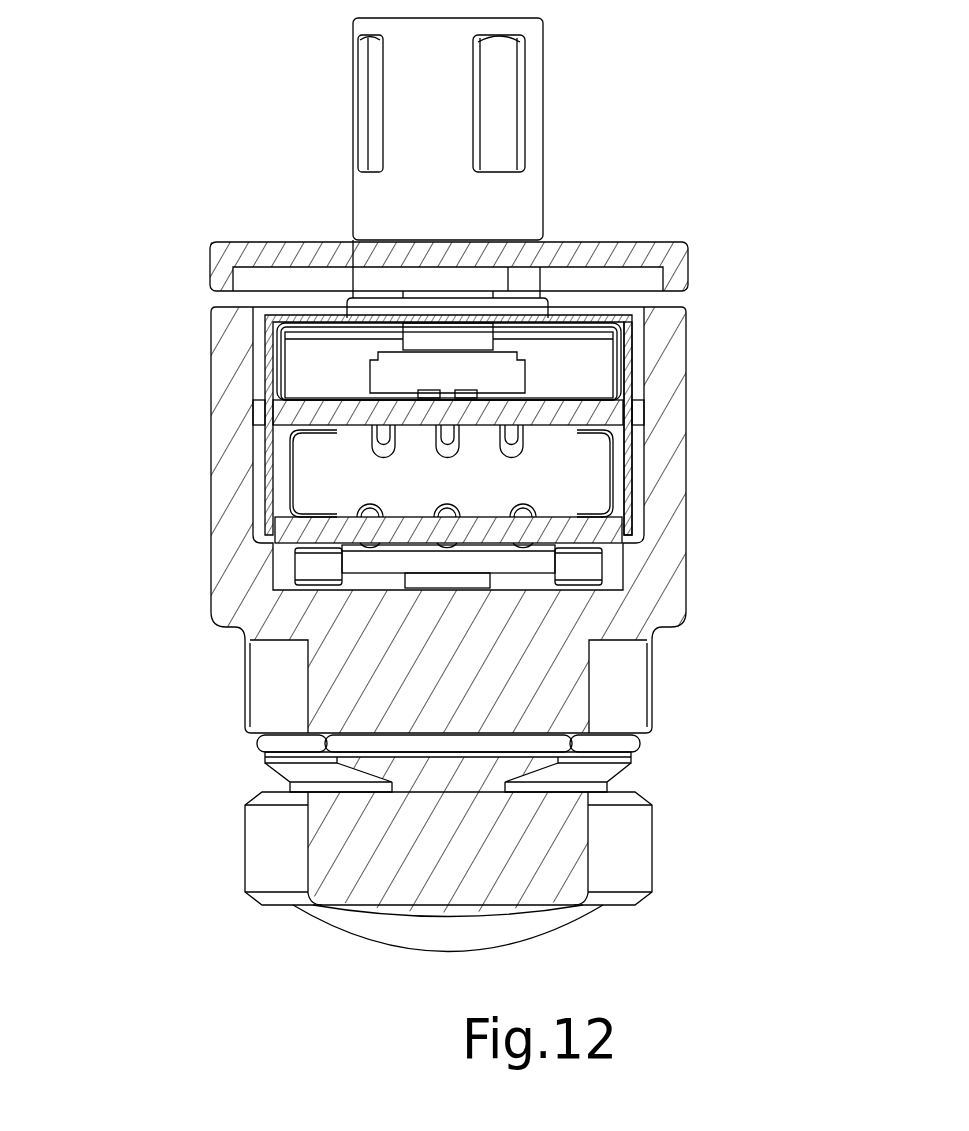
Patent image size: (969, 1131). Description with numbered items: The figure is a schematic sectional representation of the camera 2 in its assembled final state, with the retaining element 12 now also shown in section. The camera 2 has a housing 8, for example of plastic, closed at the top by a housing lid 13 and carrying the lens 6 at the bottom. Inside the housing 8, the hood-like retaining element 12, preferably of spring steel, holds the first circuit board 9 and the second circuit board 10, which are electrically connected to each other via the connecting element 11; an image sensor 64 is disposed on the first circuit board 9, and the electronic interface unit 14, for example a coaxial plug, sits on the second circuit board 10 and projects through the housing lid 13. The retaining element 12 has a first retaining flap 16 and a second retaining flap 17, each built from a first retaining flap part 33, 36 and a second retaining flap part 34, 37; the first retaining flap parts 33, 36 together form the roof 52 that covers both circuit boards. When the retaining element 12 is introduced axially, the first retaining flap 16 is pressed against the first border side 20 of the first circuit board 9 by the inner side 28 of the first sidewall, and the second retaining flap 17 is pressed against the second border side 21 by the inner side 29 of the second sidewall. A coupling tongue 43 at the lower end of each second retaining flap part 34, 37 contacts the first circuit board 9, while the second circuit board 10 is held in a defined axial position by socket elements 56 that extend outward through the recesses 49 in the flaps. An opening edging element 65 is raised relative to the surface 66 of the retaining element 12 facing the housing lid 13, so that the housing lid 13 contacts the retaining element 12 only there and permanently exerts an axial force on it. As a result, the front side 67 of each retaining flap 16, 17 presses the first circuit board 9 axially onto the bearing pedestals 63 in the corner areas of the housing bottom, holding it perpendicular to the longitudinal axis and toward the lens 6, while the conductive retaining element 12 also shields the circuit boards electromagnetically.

The camera 2 is at (302, 120).
The lens 6 is at (628, 849).
The housing 8 is at (670, 322).
The first circuit board 9 is at (612, 560).
The second circuit board 10 is at (575, 416).
The electrical connecting element 11 is at (277, 467).
The retaining element 12 is at (566, 302).
The housing lid 13 is at (223, 253).
The electronic interface unit 14 is at (452, 337).
The first retaining flap 16 is at (636, 349).
The second retaining flap 17 is at (258, 342).
The first border side 20 is at (631, 533).
The second border side 21 is at (267, 532).
The inner side of the first sidewall 28 is at (638, 368).
The inner side of the second sidewall 29 is at (256, 374).
The first retaining flap part 33 is at (615, 318).
The second retaining flap part 34 is at (623, 462).
The first retaining flap part 36 is at (325, 322).
The second retaining flap part 37 is at (267, 440).
The coupling tongue 43 is at (266, 518).
The recess 49 is at (261, 392).
The roof 52 is at (292, 302).
The socket elements 56 is at (256, 413).
The bearing pedestals 63 is at (278, 555).
The image sensor 64 is at (387, 562).
The opening edging element 65 is at (510, 300).
The surface of the retaining element 66 is at (306, 316).
The front side 67 is at (273, 545).